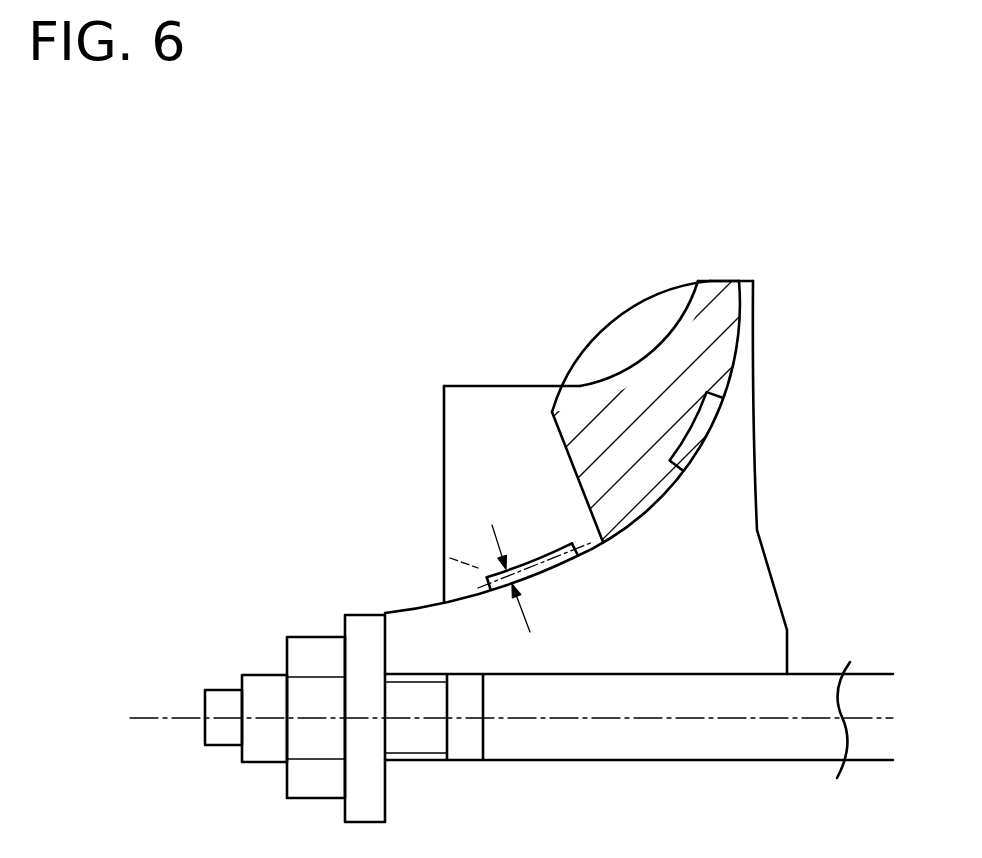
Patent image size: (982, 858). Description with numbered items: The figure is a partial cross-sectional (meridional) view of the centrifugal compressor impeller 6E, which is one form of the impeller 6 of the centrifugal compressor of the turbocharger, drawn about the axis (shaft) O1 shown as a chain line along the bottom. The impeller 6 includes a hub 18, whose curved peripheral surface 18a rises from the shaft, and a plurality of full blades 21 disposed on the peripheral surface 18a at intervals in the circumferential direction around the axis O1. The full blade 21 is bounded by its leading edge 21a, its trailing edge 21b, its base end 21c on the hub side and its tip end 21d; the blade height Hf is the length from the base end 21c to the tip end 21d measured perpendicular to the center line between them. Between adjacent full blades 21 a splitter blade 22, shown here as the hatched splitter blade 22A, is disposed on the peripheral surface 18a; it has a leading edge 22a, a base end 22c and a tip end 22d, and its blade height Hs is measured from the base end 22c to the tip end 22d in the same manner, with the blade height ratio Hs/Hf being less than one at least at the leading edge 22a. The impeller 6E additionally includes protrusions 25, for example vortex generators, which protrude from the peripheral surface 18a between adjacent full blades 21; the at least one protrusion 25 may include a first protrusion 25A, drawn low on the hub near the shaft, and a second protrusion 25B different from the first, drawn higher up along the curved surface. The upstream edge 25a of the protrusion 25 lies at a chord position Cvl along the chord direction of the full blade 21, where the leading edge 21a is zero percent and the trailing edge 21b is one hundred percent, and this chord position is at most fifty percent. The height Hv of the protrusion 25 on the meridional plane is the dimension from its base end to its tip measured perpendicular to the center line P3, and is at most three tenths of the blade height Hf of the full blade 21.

The impeller 6E is at (202, 257).
The impeller 6 is at (493, 510).
The hub 18 is at (552, 653).
The peripheral surface 18a is at (415, 606).
The full blade 21 is at (492, 385).
The leading edge 21a is at (443, 473).
The trailing edge 21b is at (722, 280).
The base end 21c is at (600, 558).
The tip end 21d is at (572, 385).
The splitter blade 22 is at (631, 409).
The splitter blade 22A is at (673, 343).
The leading edge 22a is at (587, 518).
The base end 22c is at (643, 518).
The tip end 22d is at (698, 281).
The protrusion 25 is at (654, 529).
The first protrusion 25A is at (560, 582).
The second protrusion 25B is at (695, 435).
The upstream edge 25a is at (493, 590).
The chord position of upstream edge Cvl is at (535, 565).
The center line P3 is at (450, 558).
The protrusion height Hv is at (512, 570).
The axis O1 is at (491, 718).